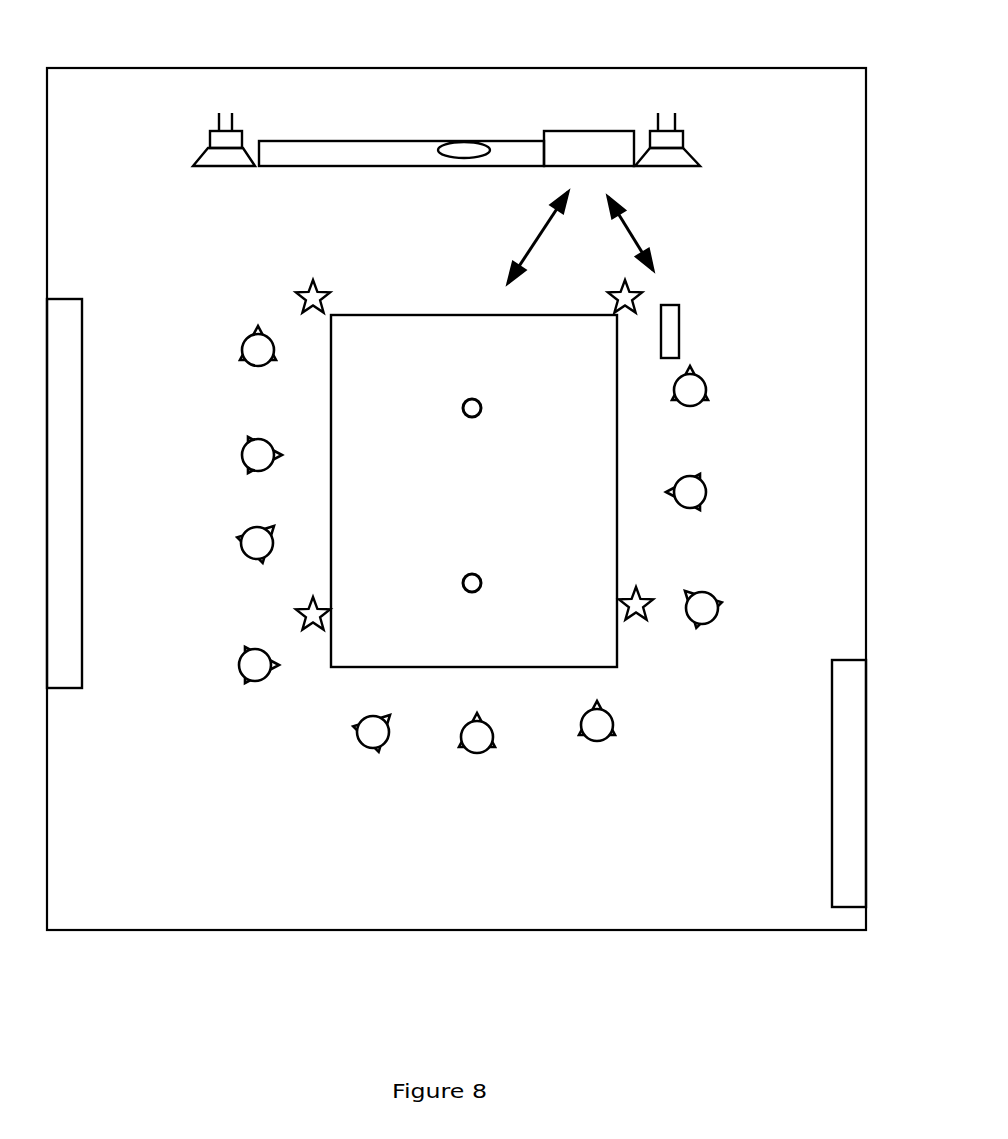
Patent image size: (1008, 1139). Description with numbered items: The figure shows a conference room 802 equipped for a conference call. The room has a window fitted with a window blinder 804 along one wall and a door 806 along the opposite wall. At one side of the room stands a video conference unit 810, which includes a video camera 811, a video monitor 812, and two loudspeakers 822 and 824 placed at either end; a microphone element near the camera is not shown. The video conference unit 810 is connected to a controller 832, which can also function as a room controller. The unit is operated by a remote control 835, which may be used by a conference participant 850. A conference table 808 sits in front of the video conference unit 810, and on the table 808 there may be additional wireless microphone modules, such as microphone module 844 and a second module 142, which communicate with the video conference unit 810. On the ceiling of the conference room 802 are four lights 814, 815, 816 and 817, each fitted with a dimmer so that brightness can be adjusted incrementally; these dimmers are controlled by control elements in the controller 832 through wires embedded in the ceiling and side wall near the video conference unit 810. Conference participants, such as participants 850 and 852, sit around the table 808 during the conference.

The conference room 802 is at (797, 68).
The window blinder 804 is at (82, 299).
The door 806 is at (850, 660).
The conference table 808 is at (383, 313).
The video conference unit 810 is at (402, 140).
The video camera 811 is at (473, 142).
The video monitor 812 is at (282, 165).
The light 814 is at (322, 284).
The light 815 is at (624, 282).
The light 816 is at (323, 598).
The light 817 is at (638, 588).
The loudspeaker 822 is at (235, 113).
The loudspeaker 824 is at (669, 127).
The controller 832 is at (563, 130).
The remote control 835 is at (676, 305).
The microphone module 844 is at (472, 398).
The microphone 142 is at (480, 574).
The conference participant 850 is at (708, 380).
The conference participant 852 is at (492, 723).